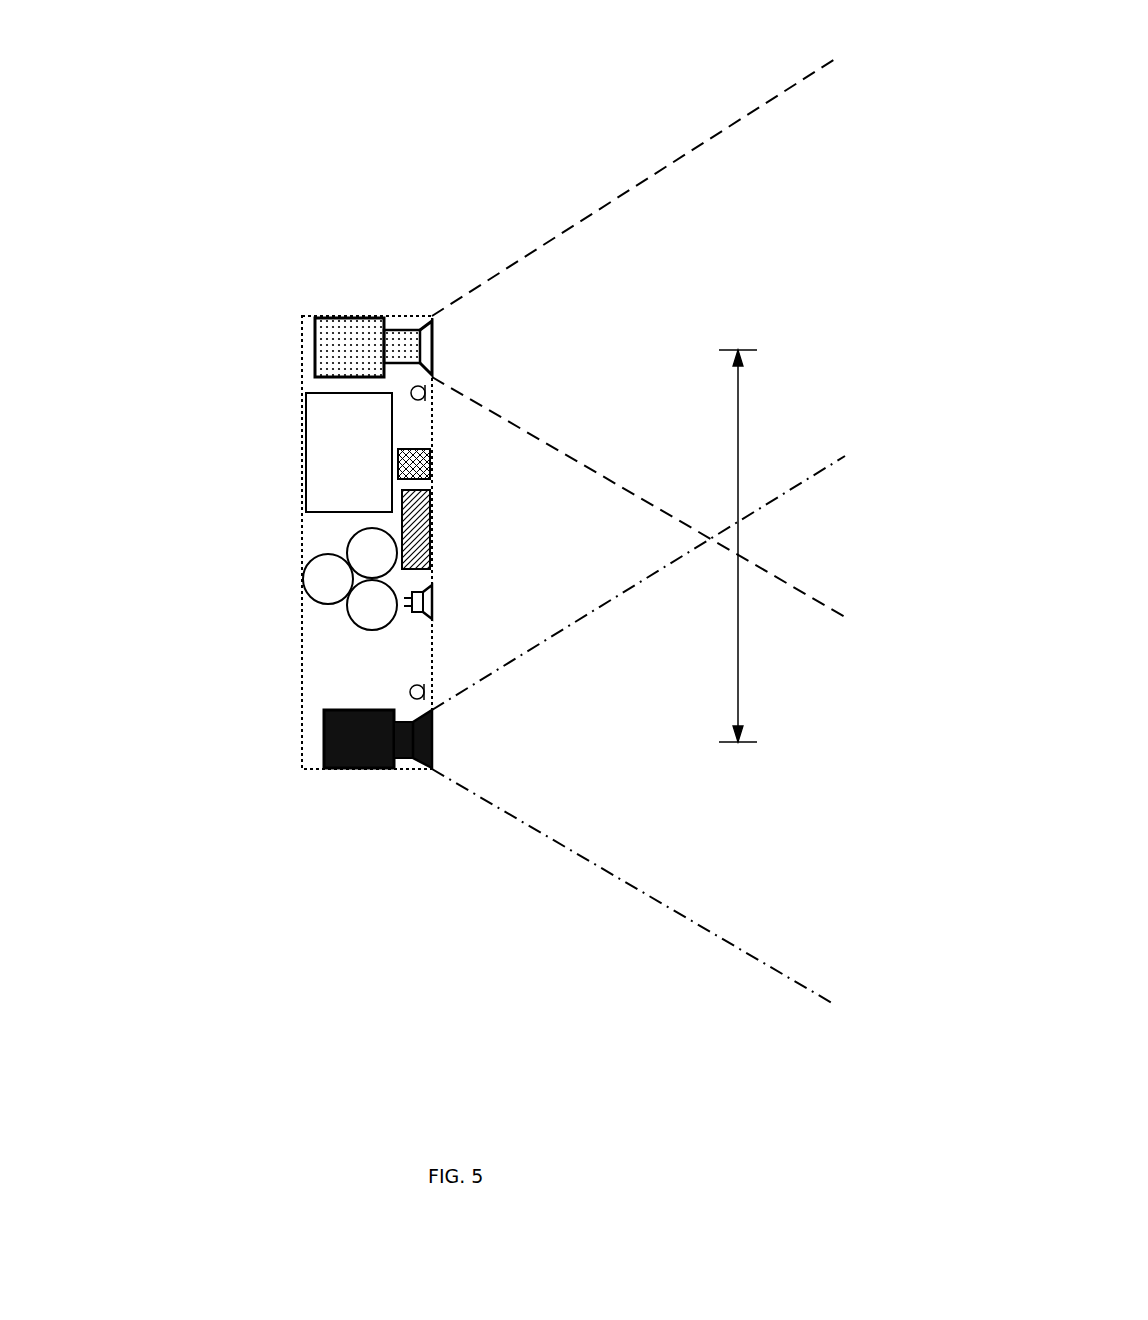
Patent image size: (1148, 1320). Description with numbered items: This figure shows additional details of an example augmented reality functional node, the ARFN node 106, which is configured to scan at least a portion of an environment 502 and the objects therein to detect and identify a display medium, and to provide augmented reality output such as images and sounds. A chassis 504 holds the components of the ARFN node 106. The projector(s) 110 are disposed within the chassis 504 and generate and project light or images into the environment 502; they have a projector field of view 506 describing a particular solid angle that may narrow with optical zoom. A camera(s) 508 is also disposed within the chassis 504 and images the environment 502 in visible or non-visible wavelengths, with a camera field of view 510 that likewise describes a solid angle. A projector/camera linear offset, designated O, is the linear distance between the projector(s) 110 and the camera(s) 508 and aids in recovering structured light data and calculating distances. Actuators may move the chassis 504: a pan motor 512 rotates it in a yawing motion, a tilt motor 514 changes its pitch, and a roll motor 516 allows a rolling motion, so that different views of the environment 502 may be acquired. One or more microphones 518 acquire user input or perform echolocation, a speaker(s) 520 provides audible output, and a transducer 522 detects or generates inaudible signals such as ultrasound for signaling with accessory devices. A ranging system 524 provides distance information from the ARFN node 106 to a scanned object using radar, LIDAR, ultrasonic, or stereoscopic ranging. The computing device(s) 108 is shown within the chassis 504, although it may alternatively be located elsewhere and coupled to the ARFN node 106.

The ARFN node 106 is at (312, 317).
The chassis 504 is at (369, 316).
The projector(s) 110 is at (352, 348).
The microphones 518 is at (422, 392).
The transducer 522 is at (428, 455).
The computing device(s) 108 is at (348, 453).
The ranging system 524 is at (428, 523).
The pan motor 512 is at (349, 551).
The tilt motor 514 is at (303, 579).
The roll motor 516 is at (349, 598).
The speaker(s) 520 is at (433, 602).
The camera(s) 508 is at (356, 740).
The projector field of view 506 is at (640, 185).
The camera field of view 510 is at (590, 862).
The environment 502 is at (788, 602).